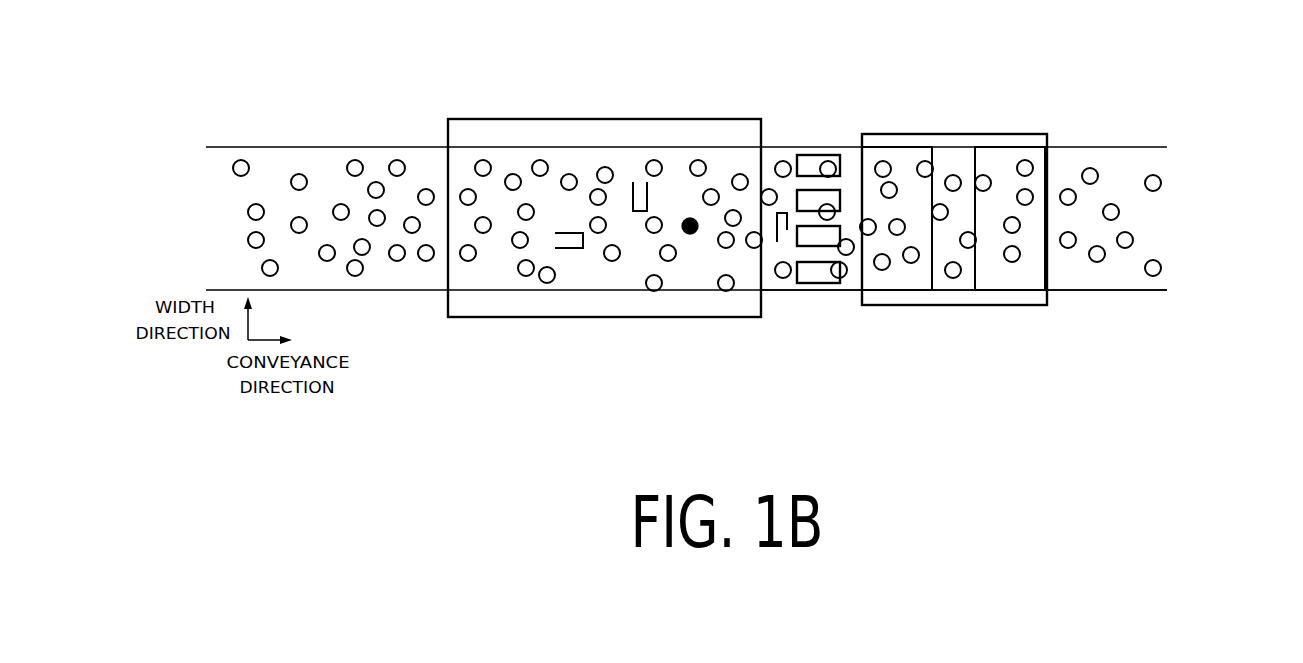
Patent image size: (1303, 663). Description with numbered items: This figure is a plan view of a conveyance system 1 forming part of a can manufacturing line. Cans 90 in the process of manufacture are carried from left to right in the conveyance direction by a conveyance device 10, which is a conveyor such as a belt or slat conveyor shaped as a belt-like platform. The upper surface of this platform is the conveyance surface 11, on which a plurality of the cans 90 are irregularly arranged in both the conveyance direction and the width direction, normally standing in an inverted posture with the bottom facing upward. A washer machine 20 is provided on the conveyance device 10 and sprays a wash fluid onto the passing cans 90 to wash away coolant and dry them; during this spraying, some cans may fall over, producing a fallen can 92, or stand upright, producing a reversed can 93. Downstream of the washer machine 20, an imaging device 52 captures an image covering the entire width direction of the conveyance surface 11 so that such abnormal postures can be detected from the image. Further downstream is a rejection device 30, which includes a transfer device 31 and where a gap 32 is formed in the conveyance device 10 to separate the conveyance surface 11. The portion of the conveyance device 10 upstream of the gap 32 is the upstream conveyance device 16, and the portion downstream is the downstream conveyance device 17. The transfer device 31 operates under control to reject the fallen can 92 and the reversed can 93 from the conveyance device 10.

The conveyance system 1 is at (1140, 64).
The conveyance device 10 is at (1181, 255).
The conveyance surface 11 is at (320, 190).
The upstream conveyance device 16 is at (845, 292).
The downstream conveyance device 17 is at (1058, 292).
The washer machine 20 is at (548, 119).
The rejection device 30 is at (970, 79).
The transfer device 31 is at (1010, 134).
The gap 32 is at (953, 289).
The imaging device 52 is at (825, 268).
The cans 90 is at (299, 174).
The fallen can 92 is at (642, 208).
The reversed can 93 is at (690, 235).